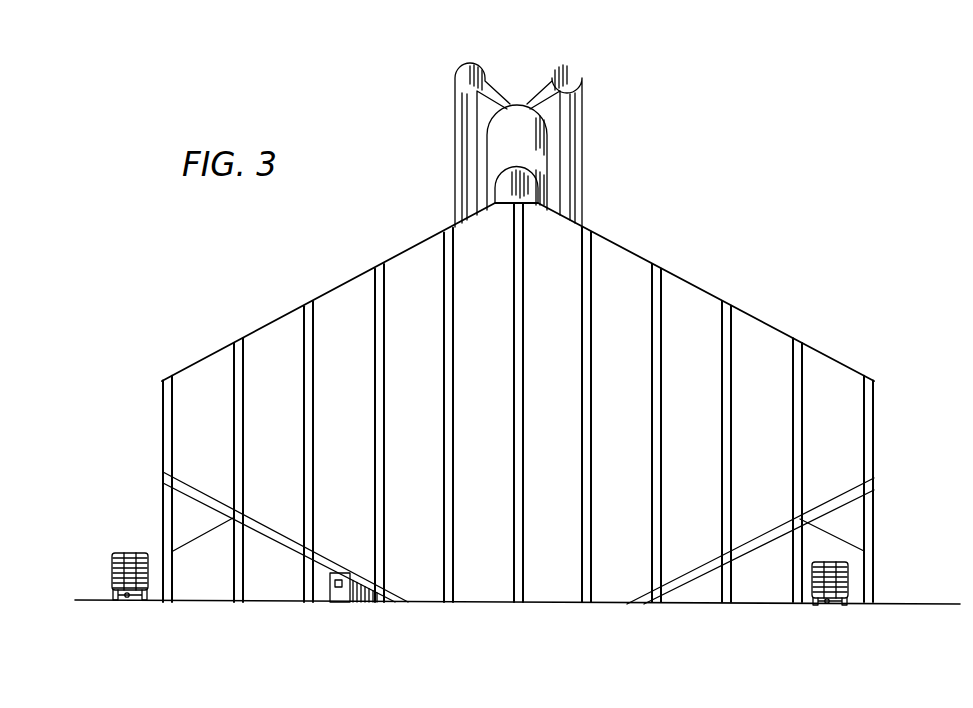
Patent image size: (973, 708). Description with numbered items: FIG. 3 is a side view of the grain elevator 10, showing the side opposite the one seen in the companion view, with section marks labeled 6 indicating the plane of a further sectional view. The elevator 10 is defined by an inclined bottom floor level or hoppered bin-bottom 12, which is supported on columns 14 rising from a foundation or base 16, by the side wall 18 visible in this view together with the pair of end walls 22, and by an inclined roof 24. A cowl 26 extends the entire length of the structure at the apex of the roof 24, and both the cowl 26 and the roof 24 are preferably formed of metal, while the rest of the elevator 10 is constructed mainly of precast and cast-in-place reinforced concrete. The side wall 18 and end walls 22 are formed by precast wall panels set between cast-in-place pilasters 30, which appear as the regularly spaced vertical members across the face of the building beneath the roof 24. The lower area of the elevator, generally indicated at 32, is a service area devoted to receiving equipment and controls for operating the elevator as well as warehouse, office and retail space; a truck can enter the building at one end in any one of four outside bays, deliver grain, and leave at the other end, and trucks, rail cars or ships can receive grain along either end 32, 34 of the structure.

The section line 6- 6 is at (425, 100).
The grain elevator 10 is at (740, 602).
The hoppered bin-bottom 12 is at (278, 546).
The columns 14 is at (874, 537).
The foundation 16 is at (323, 606).
The side wall 18 is at (762, 356).
The end walls 22 is at (876, 428).
The inclined roof 24 is at (322, 296).
The cowl 26 is at (520, 99).
The cast-in-place pilasters 30 is at (601, 296).
The service area 32 is at (125, 550).
The end of the structure 34 is at (895, 594).